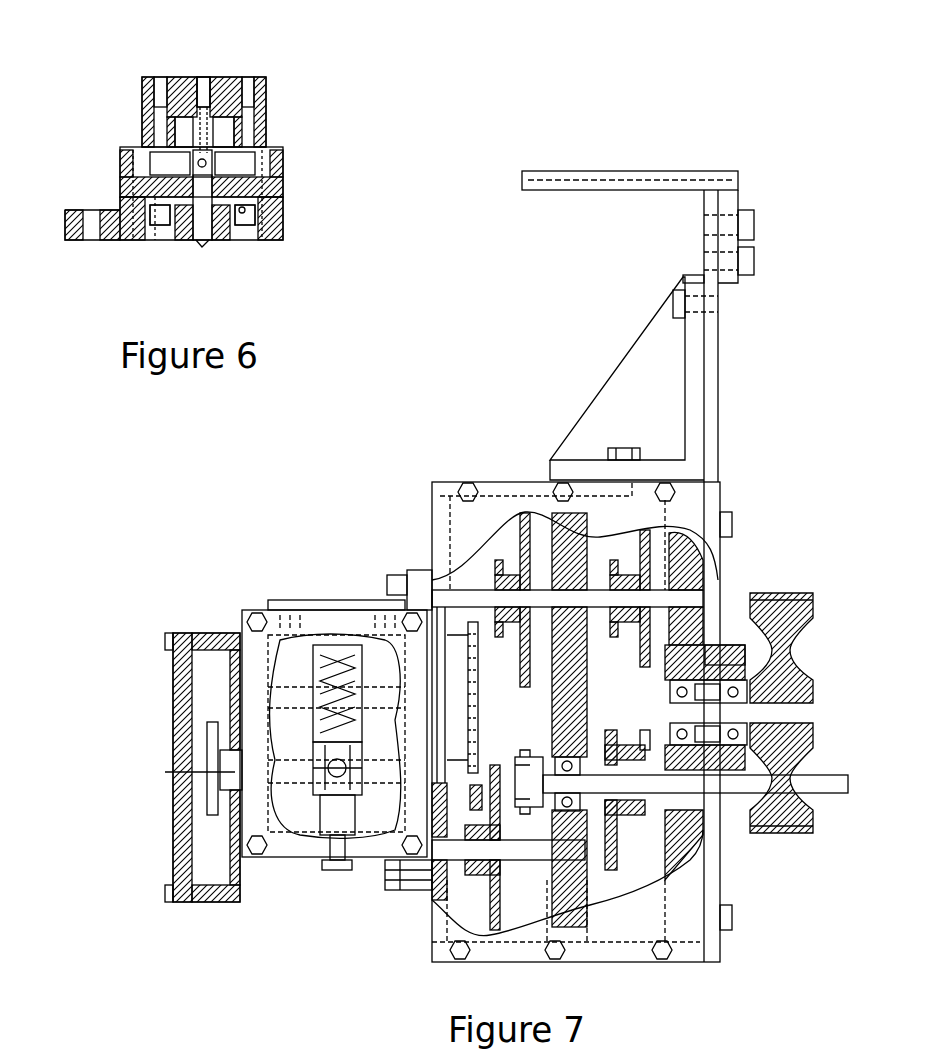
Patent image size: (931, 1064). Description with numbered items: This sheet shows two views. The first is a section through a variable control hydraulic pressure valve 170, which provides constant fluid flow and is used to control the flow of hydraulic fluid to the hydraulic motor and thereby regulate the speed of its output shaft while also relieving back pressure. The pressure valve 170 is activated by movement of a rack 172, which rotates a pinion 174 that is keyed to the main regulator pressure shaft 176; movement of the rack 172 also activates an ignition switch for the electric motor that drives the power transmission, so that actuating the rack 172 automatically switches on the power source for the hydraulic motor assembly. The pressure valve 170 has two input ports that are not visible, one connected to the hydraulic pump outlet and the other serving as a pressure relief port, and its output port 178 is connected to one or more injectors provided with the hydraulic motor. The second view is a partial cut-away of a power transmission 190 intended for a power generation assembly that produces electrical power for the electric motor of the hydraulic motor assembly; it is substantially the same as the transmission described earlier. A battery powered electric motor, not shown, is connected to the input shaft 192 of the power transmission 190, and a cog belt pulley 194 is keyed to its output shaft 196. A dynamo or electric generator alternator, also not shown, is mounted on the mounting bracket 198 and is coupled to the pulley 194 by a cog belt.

In FIG. 6, the pressure valve 170 is at (90, 120).
In FIG. 6, the rack 172 is at (240, 228).
In FIG. 6, the pinion 174 is at (160, 232).
In FIG. 6, the main regulator pressure shaft 176 is at (200, 240).
In FIG. 6, the output port 178 is at (203, 80).
In FIG. 7, the power transmission 190 is at (368, 525).
In FIG. 7, the input shaft 192 is at (225, 772).
In FIG. 7, the cog belt pulley 194 is at (812, 632).
In FIG. 7, the output shaft 196 is at (828, 713).
In FIG. 7, the mounting bracket 198 is at (574, 170).